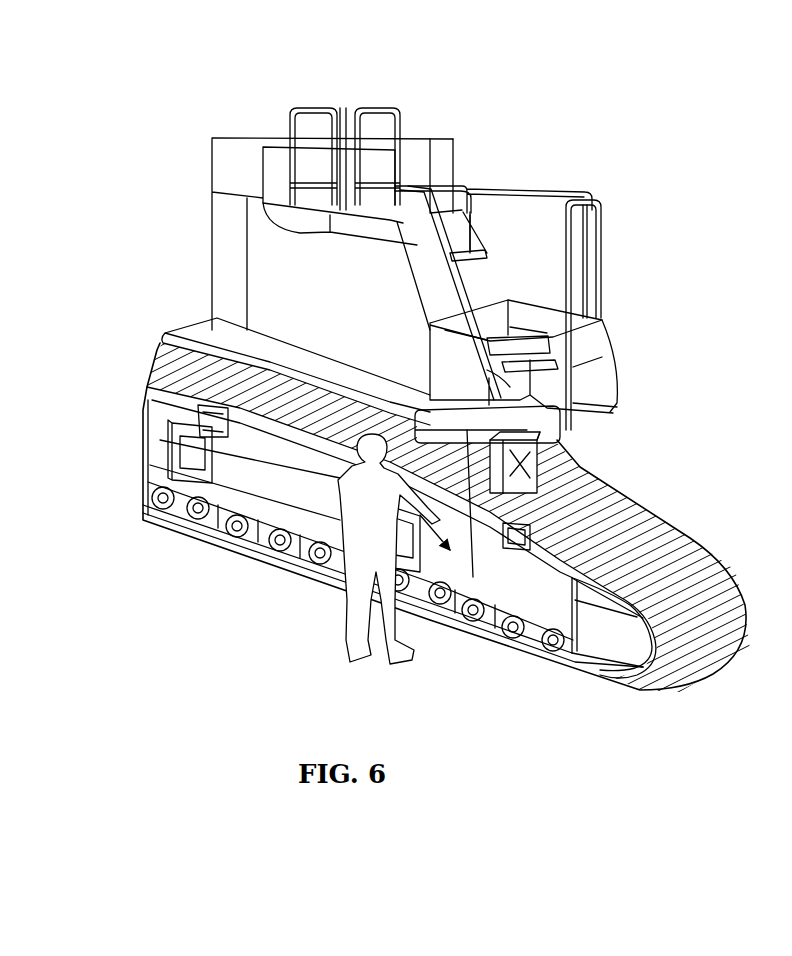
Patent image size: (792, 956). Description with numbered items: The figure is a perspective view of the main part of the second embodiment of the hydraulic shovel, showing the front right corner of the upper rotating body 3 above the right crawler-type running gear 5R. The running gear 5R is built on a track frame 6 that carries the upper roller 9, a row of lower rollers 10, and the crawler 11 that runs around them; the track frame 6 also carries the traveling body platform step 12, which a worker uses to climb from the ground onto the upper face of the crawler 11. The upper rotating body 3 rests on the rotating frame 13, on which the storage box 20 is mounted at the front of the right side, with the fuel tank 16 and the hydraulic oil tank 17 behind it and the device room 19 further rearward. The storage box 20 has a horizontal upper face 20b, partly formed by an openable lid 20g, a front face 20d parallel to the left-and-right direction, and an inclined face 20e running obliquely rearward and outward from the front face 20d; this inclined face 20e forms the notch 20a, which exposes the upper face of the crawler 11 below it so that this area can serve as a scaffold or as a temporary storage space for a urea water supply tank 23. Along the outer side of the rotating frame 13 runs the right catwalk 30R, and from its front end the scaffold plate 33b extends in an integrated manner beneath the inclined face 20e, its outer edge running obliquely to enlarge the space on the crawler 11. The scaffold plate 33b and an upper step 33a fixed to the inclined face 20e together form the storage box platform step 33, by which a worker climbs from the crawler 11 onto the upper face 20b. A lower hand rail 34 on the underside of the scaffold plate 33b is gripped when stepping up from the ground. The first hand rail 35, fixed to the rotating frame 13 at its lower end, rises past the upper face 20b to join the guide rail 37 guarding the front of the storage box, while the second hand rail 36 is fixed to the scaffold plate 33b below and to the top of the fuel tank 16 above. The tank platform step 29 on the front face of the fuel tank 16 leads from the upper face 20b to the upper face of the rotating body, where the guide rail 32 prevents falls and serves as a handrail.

The upper rotating body 3 is at (231, 112).
The right crawler-type running gear 5R is at (703, 543).
The track frame 6 is at (303, 513).
The upper roller 9 is at (198, 412).
The lower roller 10 is at (268, 540).
The crawler 11 is at (635, 537).
The traveling body platform step 12 is at (186, 478).
The rotating frame 13 is at (597, 407).
The fuel tank 16 is at (443, 200).
The hydraulic oil tank 17 is at (343, 106).
The device room 19 is at (230, 171).
The storage box 20 is at (614, 306).
The notch 20a is at (552, 380).
The upper face 20b is at (513, 300).
The front face 20d is at (600, 366).
The inclined face 20e is at (480, 340).
The lid 20g is at (545, 300).
The urea water supply tank 23 is at (540, 455).
The tank platform step 29 is at (467, 210).
The right catwalk 30R is at (218, 335).
The guide rail 32 is at (302, 106).
The storage box platform step 33 is at (505, 300).
The upper step 33a is at (560, 355).
The scaffold plate 33b is at (477, 355).
The lower hand rail 34 is at (473, 580).
The first hand rail 35 is at (572, 296).
The second hand rail 36 is at (460, 291).
The guide rail 37 is at (592, 196).